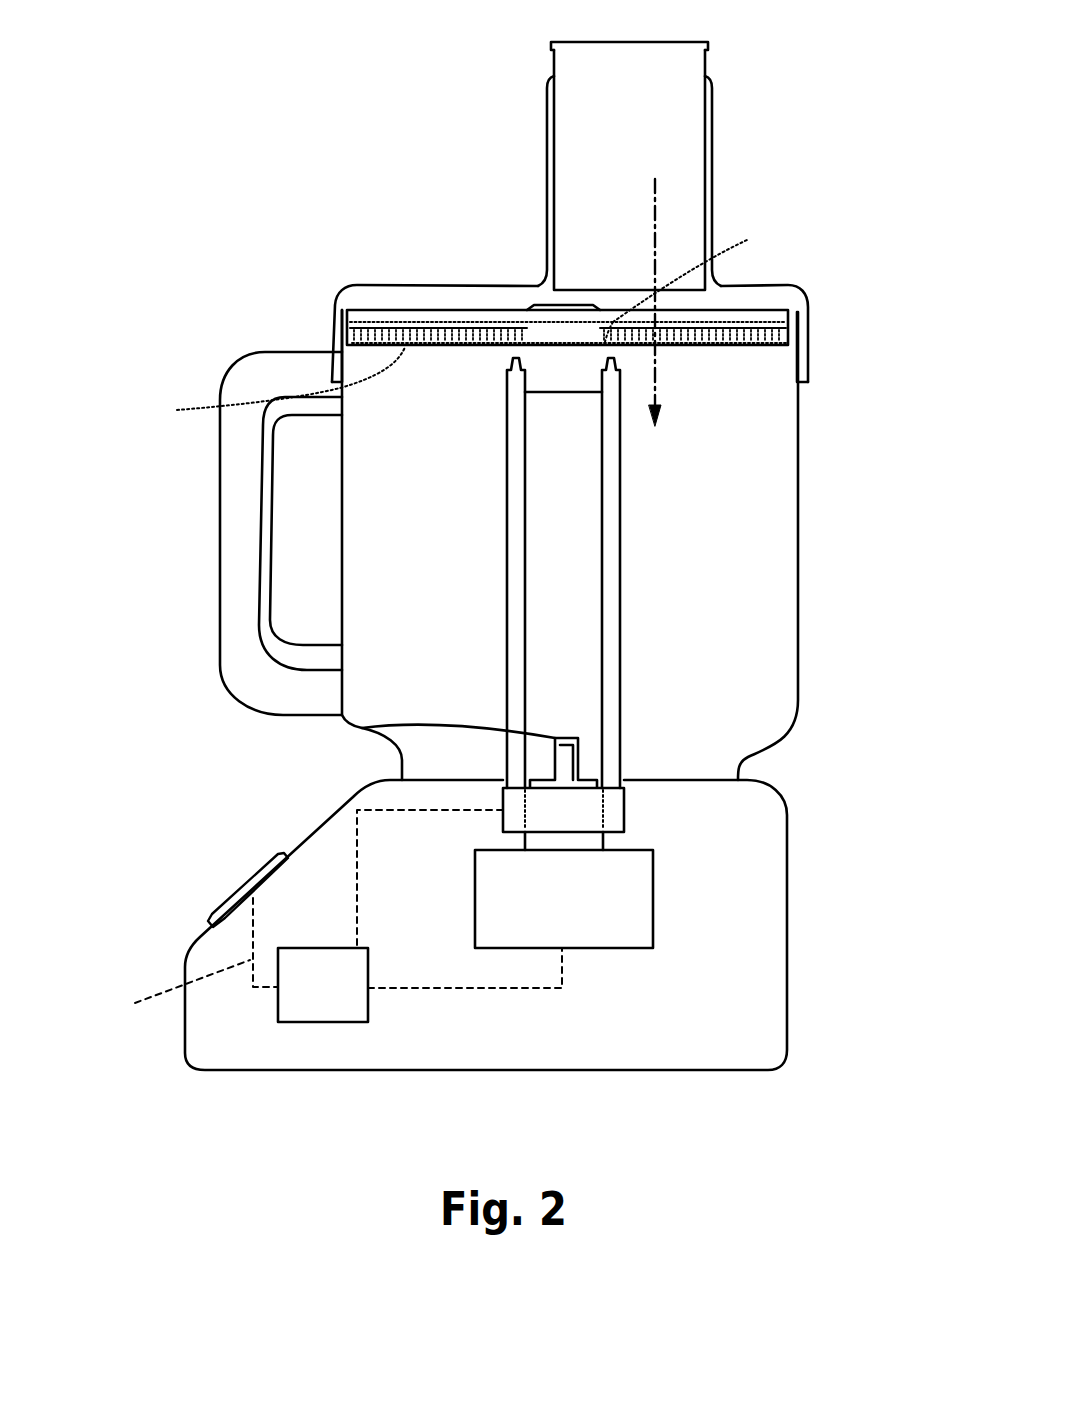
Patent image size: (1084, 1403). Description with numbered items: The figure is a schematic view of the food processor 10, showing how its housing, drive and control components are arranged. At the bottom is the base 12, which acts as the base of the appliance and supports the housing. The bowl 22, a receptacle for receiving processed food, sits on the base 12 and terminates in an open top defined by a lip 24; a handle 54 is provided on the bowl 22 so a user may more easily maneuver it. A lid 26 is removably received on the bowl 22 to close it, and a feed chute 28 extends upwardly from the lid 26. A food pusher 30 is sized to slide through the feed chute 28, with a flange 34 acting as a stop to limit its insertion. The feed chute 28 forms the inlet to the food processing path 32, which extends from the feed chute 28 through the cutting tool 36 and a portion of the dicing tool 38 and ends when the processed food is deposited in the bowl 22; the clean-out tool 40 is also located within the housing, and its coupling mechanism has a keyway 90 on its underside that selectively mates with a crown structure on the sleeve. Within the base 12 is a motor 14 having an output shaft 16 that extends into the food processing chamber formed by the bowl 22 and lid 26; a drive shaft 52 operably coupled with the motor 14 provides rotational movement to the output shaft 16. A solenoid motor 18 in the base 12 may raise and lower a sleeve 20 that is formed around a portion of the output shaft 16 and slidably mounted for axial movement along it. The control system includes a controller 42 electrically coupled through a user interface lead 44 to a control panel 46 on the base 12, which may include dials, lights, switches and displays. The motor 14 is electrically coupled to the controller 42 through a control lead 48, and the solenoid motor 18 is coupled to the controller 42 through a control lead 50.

The food processor 10 is at (238, 143).
The base 12 is at (786, 811).
The motor 14 is at (643, 908).
The output shaft 16 is at (527, 525).
The solenoid motor 18 is at (624, 807).
The sleeve 20 is at (505, 505).
The bowl 22 is at (340, 488).
The lip 24 is at (795, 332).
The lid 26 is at (353, 284).
The feed chute 28 is at (547, 142).
The food pusher 30 is at (578, 203).
The food processing path 32 is at (657, 208).
The flange 34 is at (570, 42).
The cutting tool 36 is at (350, 317).
The dicing tool 38 is at (345, 335).
The clean-out tool 40 is at (276, 387).
The controller 42 is at (308, 1022).
The user interface lead 44 is at (175, 992).
The control panel 46 is at (230, 893).
The control lead 48 is at (523, 990).
The control lead 50 is at (353, 828).
The drive shaft 52 is at (362, 730).
The handle 54 is at (248, 382).
The keyway 90 is at (694, 284).